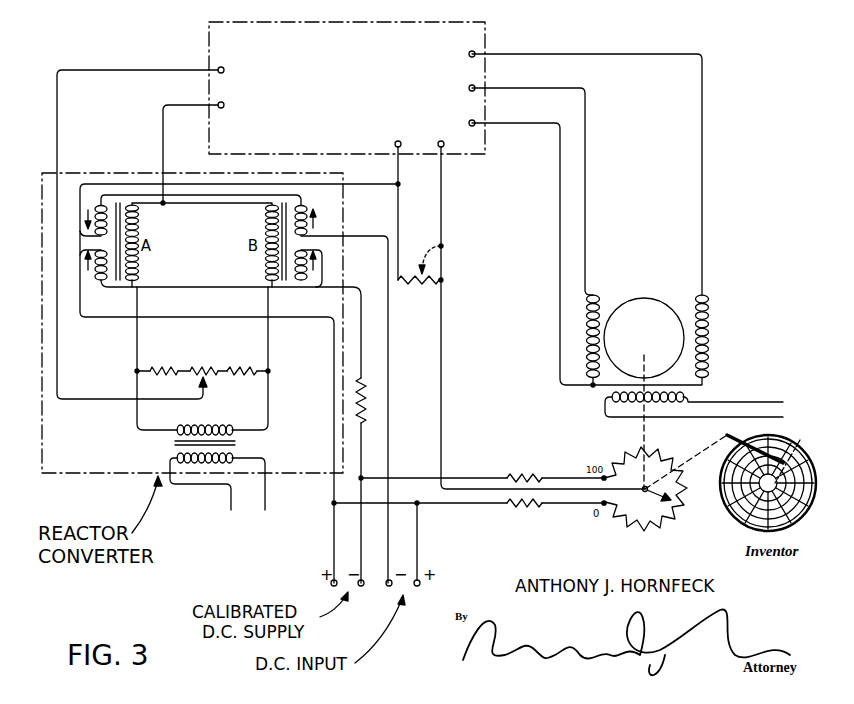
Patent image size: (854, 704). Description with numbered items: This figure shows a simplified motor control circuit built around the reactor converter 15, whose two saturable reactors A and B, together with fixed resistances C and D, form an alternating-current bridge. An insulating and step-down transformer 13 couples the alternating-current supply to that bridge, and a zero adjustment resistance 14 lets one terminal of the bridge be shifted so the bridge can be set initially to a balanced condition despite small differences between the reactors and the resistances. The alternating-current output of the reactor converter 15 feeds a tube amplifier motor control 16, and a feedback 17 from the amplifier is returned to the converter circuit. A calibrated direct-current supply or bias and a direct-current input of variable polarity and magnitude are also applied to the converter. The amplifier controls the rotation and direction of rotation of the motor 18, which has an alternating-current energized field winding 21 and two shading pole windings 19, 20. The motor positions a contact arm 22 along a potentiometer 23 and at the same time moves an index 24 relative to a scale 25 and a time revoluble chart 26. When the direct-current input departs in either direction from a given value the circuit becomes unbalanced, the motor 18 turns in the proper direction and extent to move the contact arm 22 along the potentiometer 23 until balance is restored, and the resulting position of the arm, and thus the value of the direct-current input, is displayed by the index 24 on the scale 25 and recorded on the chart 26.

The insulating and step-down transformer 13 is at (217, 472).
The zero adjustment resistance 14 is at (202, 360).
The reactor converter 15 is at (72, 475).
The tube amplifier motor control 16 is at (468, 157).
The feedback 17 is at (467, 274).
The motor 18 is at (667, 292).
The shading pole winding 19 is at (597, 300).
The shading pole winding 20 is at (716, 336).
The A.-C. energized field winding 21 is at (604, 408).
The contact arm 22 is at (656, 506).
The potentiometer 23 is at (630, 527).
The index 24 is at (725, 435).
The scale 25 is at (794, 452).
The time revoluble chart 26 is at (748, 525).